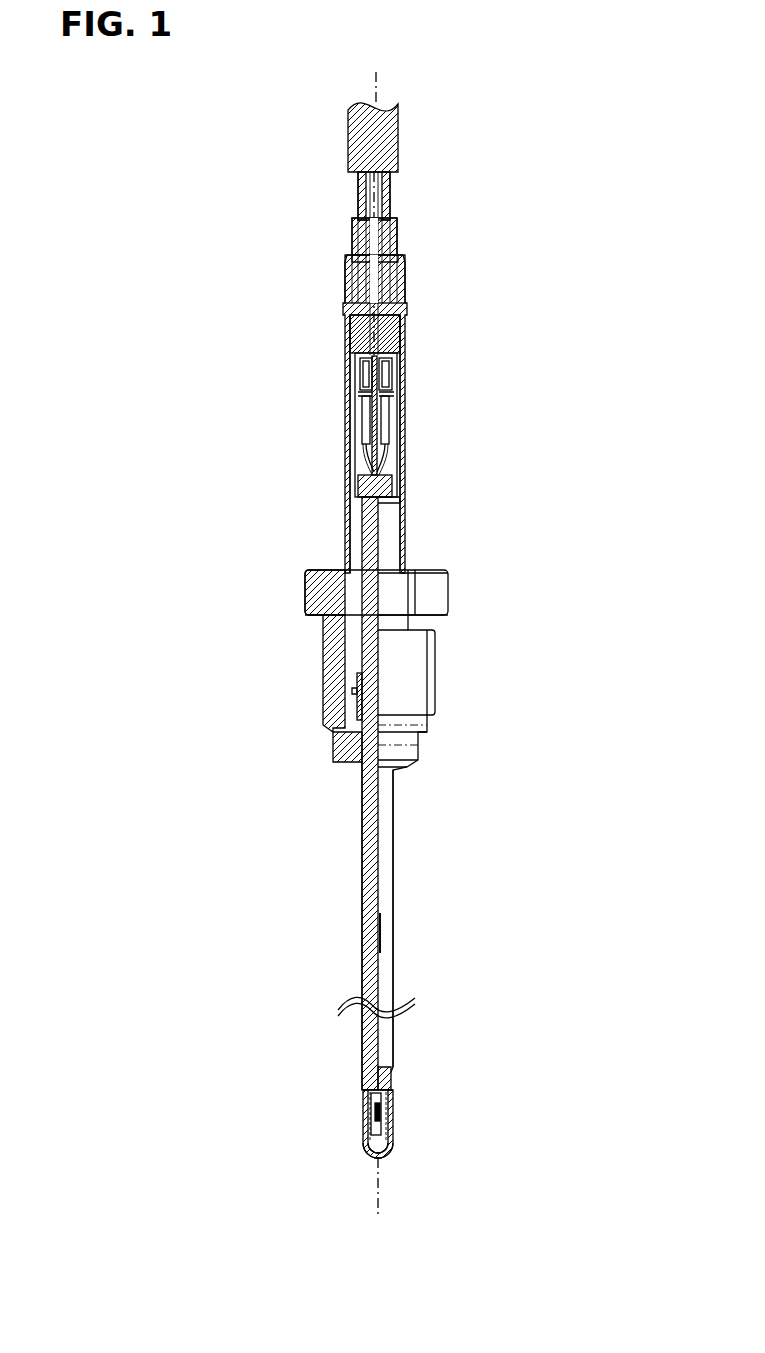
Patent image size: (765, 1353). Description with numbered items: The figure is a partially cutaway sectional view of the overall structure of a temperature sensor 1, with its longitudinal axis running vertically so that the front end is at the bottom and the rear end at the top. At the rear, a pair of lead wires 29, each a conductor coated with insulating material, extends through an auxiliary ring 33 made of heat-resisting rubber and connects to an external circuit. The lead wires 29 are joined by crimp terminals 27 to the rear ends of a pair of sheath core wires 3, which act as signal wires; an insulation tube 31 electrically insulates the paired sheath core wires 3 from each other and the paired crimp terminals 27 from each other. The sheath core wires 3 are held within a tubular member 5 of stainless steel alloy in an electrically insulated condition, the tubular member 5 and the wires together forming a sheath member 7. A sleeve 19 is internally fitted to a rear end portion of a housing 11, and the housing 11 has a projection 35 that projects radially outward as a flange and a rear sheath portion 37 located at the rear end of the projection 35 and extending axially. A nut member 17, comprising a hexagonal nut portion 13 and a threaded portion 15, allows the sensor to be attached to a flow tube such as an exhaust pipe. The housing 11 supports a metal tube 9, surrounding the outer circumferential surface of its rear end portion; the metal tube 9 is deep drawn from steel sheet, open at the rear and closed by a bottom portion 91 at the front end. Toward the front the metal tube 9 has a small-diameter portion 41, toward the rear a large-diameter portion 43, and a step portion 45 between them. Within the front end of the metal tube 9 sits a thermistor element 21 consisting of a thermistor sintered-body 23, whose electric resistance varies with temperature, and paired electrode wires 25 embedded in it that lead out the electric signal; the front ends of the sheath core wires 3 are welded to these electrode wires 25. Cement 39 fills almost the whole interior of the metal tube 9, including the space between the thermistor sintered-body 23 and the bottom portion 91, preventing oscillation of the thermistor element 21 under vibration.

The temperature sensor 1 is at (176, 242).
The sheath core wires 3 is at (365, 450).
The tubular member 5 is at (362, 1058).
The sheath member 7 is at (293, 1055).
The metal tube 9 is at (388, 862).
The housing 11 is at (232, 680).
The hexagonal nut portion 13 is at (448, 585).
The threaded portion 15 is at (435, 640).
The nut member 17 is at (520, 570).
The sleeve 19 is at (347, 510).
The thermistor element 21 is at (290, 1148).
The thermistor sintered-body 23 is at (365, 1160).
The electrode wires 25 is at (365, 1135).
The crimp terminals 27 is at (362, 392).
The lead wires 29 is at (358, 190).
The insulation tube 31 is at (397, 418).
The auxiliary ring 33 is at (397, 240).
The projection 35 is at (340, 745).
The rear sheath portion 37 is at (358, 696).
The cement 39 is at (365, 1123).
The small-diameter portion 41 is at (393, 1133).
The large-diameter portion 43 is at (393, 1043).
The step portion 45 is at (393, 1097).
The bottom portion 91 is at (381, 1158).